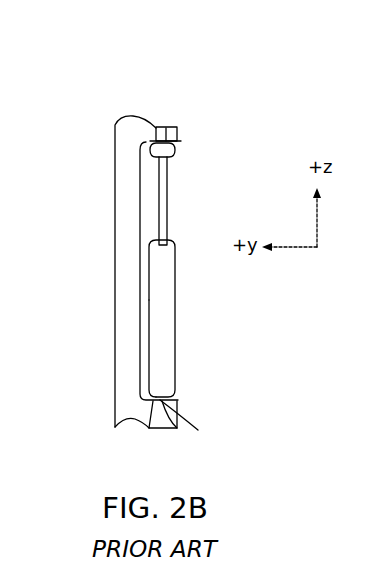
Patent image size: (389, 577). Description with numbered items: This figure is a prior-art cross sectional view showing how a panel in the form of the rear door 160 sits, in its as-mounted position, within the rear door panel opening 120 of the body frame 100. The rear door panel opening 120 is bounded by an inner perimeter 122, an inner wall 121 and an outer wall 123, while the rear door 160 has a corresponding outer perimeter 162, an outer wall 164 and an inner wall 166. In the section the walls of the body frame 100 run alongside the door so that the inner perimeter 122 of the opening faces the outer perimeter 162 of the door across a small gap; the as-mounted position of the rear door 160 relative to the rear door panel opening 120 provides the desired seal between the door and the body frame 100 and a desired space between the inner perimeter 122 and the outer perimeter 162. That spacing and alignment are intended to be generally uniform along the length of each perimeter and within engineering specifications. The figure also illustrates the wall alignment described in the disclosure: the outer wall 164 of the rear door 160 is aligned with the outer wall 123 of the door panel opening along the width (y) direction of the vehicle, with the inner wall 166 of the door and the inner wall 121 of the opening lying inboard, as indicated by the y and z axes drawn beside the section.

The body frame 100 is at (114, 127).
The rear door panel opening 120 is at (142, 197).
The inner wall 121 is at (140, 268).
The inner perimeter 122 is at (156, 127).
The outer wall 123 is at (177, 128).
The rear door 160 is at (176, 315).
The outer perimeter 162 is at (166, 128).
The outer wall 164 is at (176, 350).
The inner wall 166 is at (150, 368).